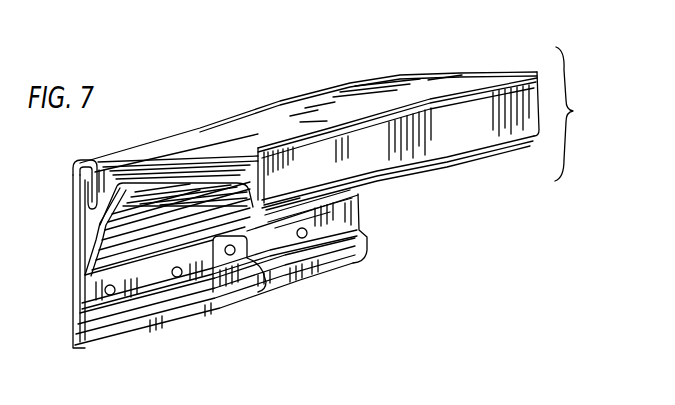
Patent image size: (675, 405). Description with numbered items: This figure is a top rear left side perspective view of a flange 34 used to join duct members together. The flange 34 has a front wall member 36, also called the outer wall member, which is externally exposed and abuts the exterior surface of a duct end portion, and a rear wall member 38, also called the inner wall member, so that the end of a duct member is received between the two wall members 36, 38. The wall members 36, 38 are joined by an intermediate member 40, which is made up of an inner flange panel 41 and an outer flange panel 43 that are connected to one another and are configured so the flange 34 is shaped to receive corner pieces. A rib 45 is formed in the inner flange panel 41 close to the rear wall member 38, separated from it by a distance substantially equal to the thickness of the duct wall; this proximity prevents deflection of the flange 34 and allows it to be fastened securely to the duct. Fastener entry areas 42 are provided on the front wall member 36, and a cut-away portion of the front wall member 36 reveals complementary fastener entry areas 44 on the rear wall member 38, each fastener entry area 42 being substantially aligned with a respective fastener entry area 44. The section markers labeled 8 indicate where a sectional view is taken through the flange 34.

The flange 34 is at (451, 72).
The front wall member 36 is at (352, 203).
The rear wall member 38 is at (72, 272).
The intermediate member 40 is at (578, 110).
The inner flange panel 41 is at (187, 160).
The fastener entry areas 42 is at (113, 296).
The outer flange panel 43 is at (218, 300).
The fastener entry areas 44 is at (265, 272).
The rib 45 is at (94, 162).
The section line 8 is at (20, 328).